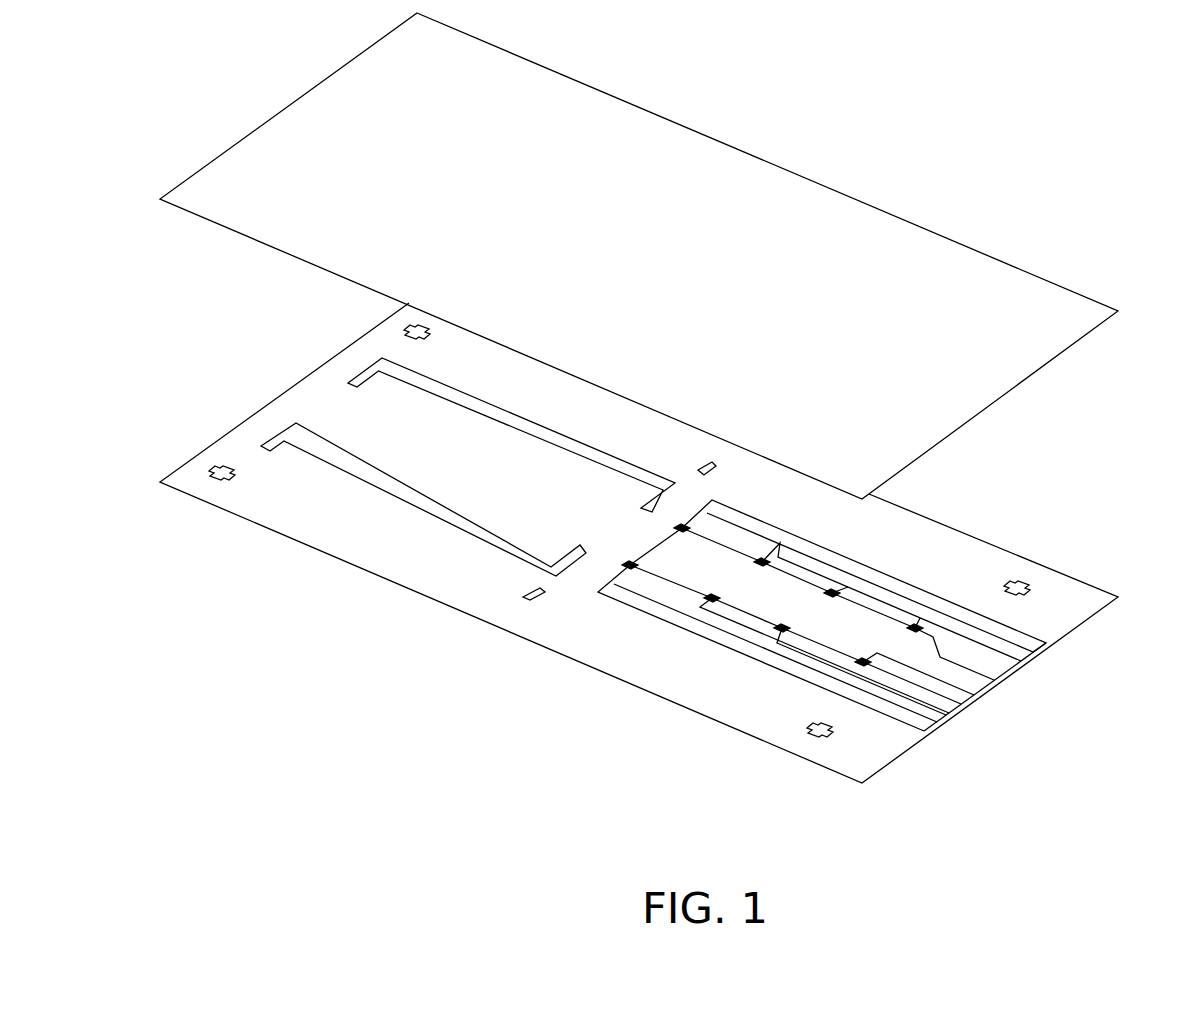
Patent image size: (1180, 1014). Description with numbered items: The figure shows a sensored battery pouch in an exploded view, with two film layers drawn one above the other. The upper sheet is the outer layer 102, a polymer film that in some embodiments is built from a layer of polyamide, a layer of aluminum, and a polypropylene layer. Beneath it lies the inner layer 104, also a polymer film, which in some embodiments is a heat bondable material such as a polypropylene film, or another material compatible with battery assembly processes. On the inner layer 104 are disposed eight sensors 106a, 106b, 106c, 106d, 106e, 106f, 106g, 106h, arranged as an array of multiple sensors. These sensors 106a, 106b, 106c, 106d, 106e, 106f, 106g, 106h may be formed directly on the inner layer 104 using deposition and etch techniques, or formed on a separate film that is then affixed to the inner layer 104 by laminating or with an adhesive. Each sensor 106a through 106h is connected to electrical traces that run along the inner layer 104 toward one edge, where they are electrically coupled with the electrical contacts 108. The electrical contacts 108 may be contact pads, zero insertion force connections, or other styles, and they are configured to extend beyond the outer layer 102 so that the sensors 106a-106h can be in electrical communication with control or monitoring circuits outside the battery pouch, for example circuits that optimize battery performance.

The outer layer 102 is at (1028, 292).
The inner layer 104 is at (1050, 572).
The sensor 106a is at (682, 528).
The sensor 106b is at (630, 565).
The sensor 106c is at (762, 562).
The sensor 106d is at (712, 598).
The sensor 106e is at (782, 628).
The sensor 106f is at (832, 593).
The sensor 106g is at (863, 662).
The sensor 106h is at (913, 628).
The electrical contacts 108 is at (1013, 693).